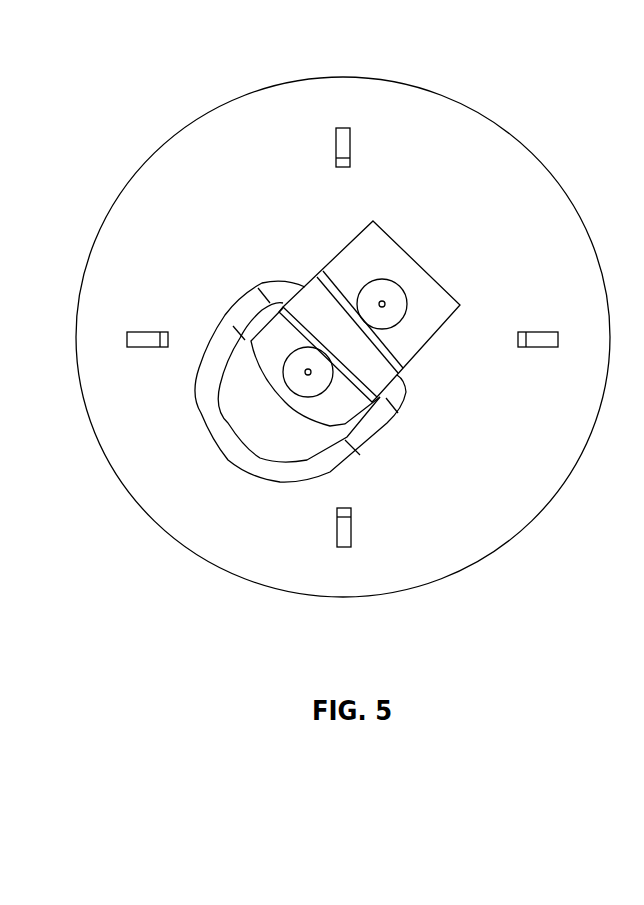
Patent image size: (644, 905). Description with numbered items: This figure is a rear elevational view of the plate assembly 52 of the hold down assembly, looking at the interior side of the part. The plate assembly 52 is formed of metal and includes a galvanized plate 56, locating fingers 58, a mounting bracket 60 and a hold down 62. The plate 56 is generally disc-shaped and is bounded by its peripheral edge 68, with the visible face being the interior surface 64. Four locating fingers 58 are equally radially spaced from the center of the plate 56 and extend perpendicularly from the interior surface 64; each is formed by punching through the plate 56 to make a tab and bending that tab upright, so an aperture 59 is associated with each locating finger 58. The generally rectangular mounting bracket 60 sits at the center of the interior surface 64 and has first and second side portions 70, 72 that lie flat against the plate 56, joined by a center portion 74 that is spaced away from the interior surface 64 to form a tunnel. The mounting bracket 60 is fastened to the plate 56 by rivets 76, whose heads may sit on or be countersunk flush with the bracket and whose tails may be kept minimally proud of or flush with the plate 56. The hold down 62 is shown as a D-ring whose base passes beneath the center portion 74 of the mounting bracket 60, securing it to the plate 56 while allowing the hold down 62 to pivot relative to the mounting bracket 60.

The plate assembly 52 is at (343, 327).
The plate 56 is at (343, 313).
The locating fingers 58 is at (342, 334).
The aperture 59 is at (347, 148).
The mounting bracket 60 is at (385, 311).
The hold down 62 is at (212, 418).
The interior surface 64 is at (343, 313).
The peripheral edge 68 is at (422, 88).
The first side portion 70 is at (277, 391).
The second side portion 72 is at (445, 311).
The center portion 74 is at (313, 307).
The rivets 76 is at (400, 297).